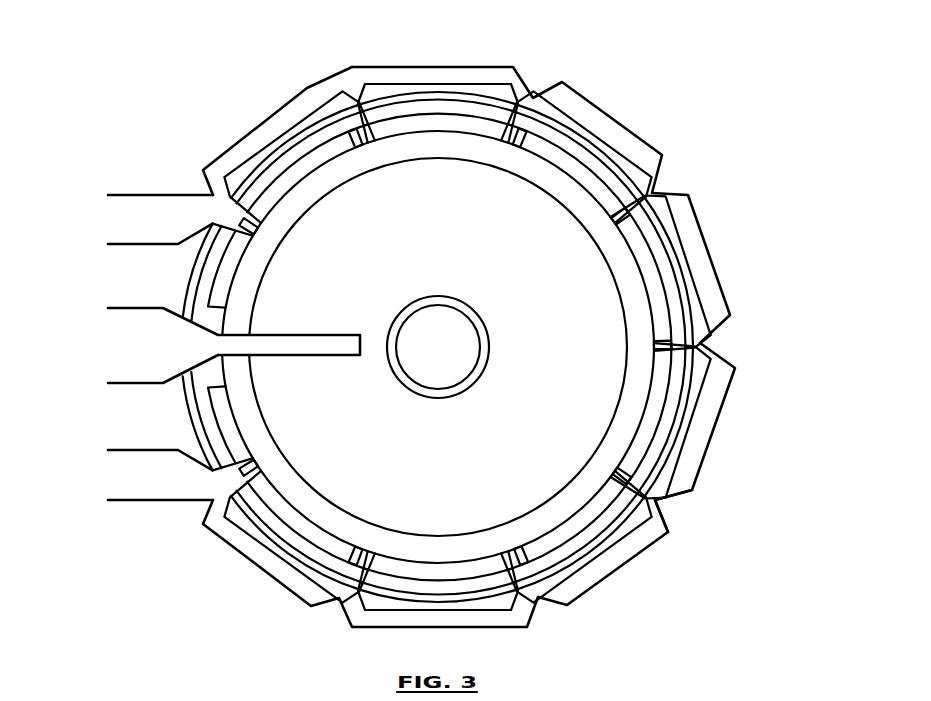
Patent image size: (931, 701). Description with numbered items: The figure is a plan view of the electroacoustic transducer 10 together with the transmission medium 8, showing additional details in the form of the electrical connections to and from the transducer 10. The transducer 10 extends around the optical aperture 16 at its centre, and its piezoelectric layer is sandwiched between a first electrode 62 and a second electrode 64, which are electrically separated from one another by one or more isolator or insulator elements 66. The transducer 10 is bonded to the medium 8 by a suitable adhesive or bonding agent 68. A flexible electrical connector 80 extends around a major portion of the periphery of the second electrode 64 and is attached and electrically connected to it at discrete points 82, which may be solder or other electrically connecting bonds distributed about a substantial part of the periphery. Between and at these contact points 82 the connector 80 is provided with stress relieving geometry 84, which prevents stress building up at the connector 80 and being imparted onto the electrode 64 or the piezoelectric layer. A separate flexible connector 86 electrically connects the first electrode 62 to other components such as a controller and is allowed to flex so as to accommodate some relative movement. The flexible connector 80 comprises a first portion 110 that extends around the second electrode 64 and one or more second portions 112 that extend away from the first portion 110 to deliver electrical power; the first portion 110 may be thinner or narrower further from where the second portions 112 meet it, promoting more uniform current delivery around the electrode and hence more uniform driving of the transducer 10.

The transducer 10 is at (712, 114).
The first portion 110 is at (700, 64).
The second portions 112 is at (112, 215).
The flexible connector 86 is at (107, 340).
The transmission medium 8 is at (686, 291).
The optical aperture 16 is at (449, 357).
The first electrode 62 is at (529, 358).
The second electrode 64 is at (652, 413).
The isolator or insulator elements 66 is at (388, 157).
The adhesive or bonding agent 68 is at (283, 160).
The flexible electrical connector 80 is at (622, 558).
The discrete points 82 is at (358, 557).
The stress relieving geometry 84 is at (670, 502).